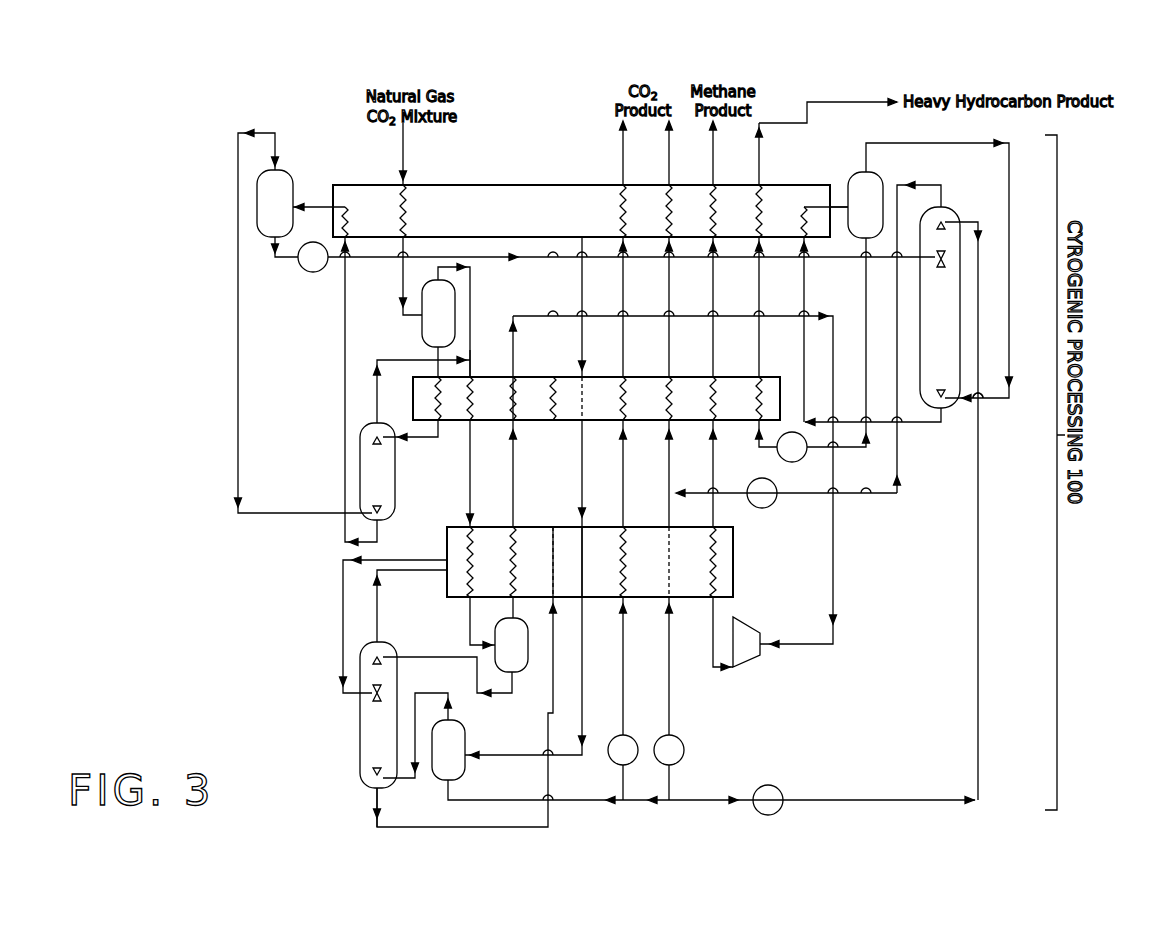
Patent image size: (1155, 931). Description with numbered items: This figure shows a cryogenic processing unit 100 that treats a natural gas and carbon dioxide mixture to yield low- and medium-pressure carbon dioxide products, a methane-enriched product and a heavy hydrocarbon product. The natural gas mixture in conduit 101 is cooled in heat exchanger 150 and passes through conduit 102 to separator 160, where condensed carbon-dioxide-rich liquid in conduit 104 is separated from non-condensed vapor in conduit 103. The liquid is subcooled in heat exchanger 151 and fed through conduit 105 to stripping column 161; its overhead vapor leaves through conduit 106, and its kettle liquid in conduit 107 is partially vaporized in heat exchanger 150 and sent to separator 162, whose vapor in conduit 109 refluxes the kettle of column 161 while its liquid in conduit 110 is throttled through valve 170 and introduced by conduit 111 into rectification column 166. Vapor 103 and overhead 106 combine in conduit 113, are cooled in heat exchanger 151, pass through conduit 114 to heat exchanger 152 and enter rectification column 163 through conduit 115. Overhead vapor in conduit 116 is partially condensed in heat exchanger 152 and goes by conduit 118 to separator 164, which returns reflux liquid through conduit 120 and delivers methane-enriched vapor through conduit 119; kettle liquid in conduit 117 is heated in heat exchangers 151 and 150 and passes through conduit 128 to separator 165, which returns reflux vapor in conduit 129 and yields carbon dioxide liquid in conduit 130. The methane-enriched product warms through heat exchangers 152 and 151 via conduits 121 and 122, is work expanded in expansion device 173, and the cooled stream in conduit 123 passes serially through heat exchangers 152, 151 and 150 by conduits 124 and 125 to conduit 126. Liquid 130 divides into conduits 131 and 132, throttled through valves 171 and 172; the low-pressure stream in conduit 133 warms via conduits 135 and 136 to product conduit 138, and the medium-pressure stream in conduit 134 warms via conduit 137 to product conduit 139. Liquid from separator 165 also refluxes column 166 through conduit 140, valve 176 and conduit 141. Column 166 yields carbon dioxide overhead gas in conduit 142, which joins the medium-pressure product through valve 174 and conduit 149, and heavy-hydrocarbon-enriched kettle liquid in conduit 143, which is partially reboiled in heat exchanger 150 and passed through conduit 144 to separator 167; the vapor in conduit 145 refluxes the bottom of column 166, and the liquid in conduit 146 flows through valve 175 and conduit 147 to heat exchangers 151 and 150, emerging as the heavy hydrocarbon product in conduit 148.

The cryogenic processing unit 100 is at (318, 207).
The natural gas mixture conduit 101 is at (405, 161).
The partially liquefied gas conduit 102 is at (404, 290).
The non-condensed vapor conduit 103 is at (474, 290).
The condensed liquid conduit 104 is at (434, 355).
The subcooled liquid conduit 105 is at (430, 438).
The overhead vapor conduit 106 is at (375, 392).
The kettle liquid conduit 107 is at (345, 398).
The reflux vapor conduit 109 is at (238, 300).
The carbon dioxide liquid conduit 110 is at (287, 258).
The throttled liquid conduit 111 is at (392, 259).
The methane-containing gas mixture conduit 113 is at (478, 363).
The cooled methane-containing gas conduit 114 is at (470, 500).
The column feed conduit 115 is at (343, 620).
The overhead vapor stream conduit 116 is at (383, 615).
The kettle liquid conduit 117 is at (375, 806).
The partially condensed overhead conduit 118 is at (469, 632).
The methane-enriched vapor product conduit 119 is at (516, 610).
The reflux liquid conduit 120 is at (512, 697).
The methane-enriched product conduit 121 is at (513, 472).
The superheated vapor conduit 122 is at (836, 333).
The expanded product conduit 123 is at (728, 671).
The methane-enriched product conduit 124 is at (720, 458).
The methane-enriched product conduit 125 is at (715, 281).
The methane-enriched product conduit 126 is at (713, 142).
The partially vaporized stream conduit 128 is at (582, 673).
The reflux vapor conduit 129 is at (418, 693).
The carbon dioxide liquid conduit 130 is at (440, 826).
The minor fraction conduit 131 is at (618, 785).
The major fraction conduit 132 is at (672, 785).
The throttled low-pressure carbon dioxide conduit 133 is at (623, 667).
The throttled medium-pressure carbon dioxide conduit 134 is at (671, 685).
The low-pressure carbon dioxide conduit 135 is at (625, 488).
The low-pressure carbon dioxide conduit 136 is at (648, 272).
The medium-pressure carbon dioxide conduit 137 is at (671, 281).
The low-pressure carbon dioxide product conduit 138 is at (623, 152).
The medium-pressure carbon dioxide product conduit 139 is at (667, 152).
The reflux liquid conduit 140 is at (712, 803).
The reflux liquid conduit 141 is at (975, 602).
The carbon dioxide overhead gas conduit 142 is at (928, 186).
The heavy hydrocarbon enriched kettle liquid conduit 143 is at (925, 422).
The partially reboiled kettle liquid conduit 144 is at (835, 207).
The reflux vapor conduit 145 is at (917, 143).
The heavy hydrocarbon liquid conduit 146 is at (870, 431).
The heavy hydrocarbon product conduit 147 is at (768, 451).
The heavy hydrocarbon product conduit 148 is at (762, 165).
The overhead gas conduit 149 is at (733, 494).
The heat exchanger 150 is at (474, 220).
The heat exchanger 151 is at (600, 422).
The heat exchanger 152 is at (603, 598).
The separator 160 is at (426, 327).
The stripping column 161 is at (365, 477).
The separator 162 is at (263, 215).
The rectification column 163 is at (358, 736).
The separator 164 is at (500, 656).
The separator 165 is at (436, 759).
The rectification column 166 is at (927, 325).
The separator 167 is at (854, 214).
The valve 170 is at (313, 272).
The valve 171 is at (629, 759).
The valve 172 is at (678, 740).
The expansion device 173 is at (748, 624).
The valve 174 is at (766, 508).
The valve 175 is at (799, 462).
The valve 176 is at (777, 796).